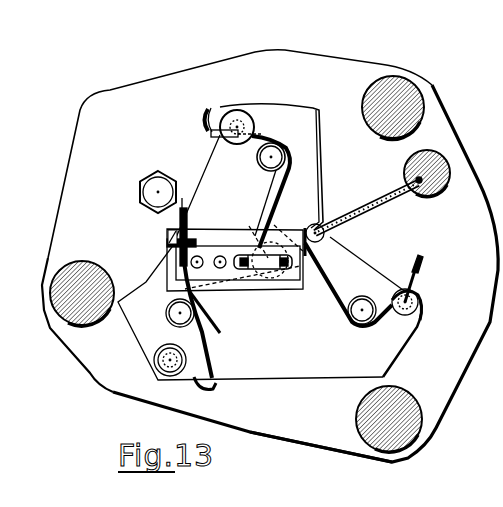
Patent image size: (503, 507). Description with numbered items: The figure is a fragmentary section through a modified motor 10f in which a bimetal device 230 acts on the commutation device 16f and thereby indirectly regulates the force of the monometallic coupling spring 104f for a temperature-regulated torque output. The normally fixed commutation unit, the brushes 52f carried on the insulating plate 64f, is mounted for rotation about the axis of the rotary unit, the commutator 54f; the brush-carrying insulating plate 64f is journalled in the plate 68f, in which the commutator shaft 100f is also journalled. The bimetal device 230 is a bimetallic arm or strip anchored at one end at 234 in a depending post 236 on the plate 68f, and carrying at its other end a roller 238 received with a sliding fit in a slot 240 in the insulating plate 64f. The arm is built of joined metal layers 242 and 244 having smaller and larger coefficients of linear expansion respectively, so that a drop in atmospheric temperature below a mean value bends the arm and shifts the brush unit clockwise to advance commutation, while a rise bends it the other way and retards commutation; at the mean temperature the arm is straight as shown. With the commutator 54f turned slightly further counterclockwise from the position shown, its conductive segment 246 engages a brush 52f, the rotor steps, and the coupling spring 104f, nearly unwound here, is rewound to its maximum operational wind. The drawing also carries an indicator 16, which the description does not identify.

The motor 10f is at (427, 27).
The cylinder 16 is at (249, 292).
The commutation device 16f is at (283, 300).
The brushes 52f is at (268, 211).
The commutator 54f is at (264, 238).
The insulating plate 64f is at (300, 376).
The plate 68f is at (302, 432).
The commutator shaft 100f is at (260, 242).
The coupling spring 104f is at (211, 337).
The bimetal device 230 is at (369, 201).
The anchorage 234 is at (420, 182).
The depending post 236 is at (442, 186).
The roller 238 is at (322, 231).
The slot 240 is at (324, 244).
The metal layer 242 is at (360, 207).
The metal layer 244 is at (367, 211).
The conductive segment 246 is at (352, 275).